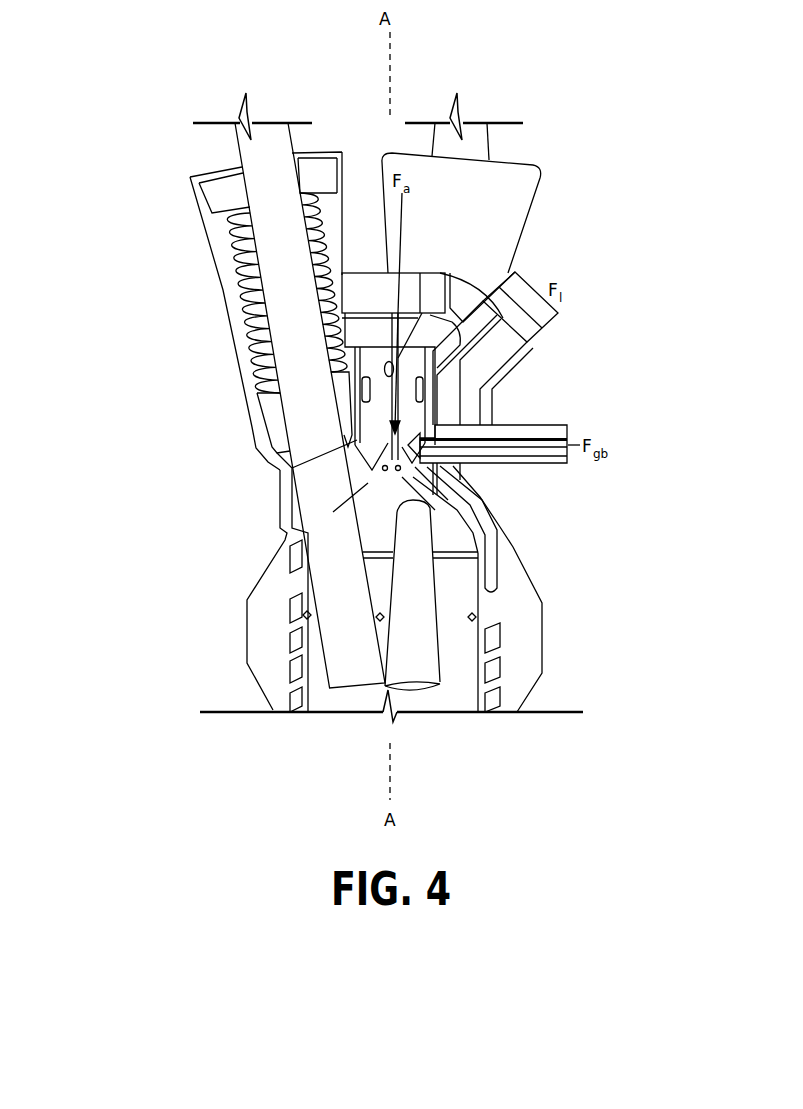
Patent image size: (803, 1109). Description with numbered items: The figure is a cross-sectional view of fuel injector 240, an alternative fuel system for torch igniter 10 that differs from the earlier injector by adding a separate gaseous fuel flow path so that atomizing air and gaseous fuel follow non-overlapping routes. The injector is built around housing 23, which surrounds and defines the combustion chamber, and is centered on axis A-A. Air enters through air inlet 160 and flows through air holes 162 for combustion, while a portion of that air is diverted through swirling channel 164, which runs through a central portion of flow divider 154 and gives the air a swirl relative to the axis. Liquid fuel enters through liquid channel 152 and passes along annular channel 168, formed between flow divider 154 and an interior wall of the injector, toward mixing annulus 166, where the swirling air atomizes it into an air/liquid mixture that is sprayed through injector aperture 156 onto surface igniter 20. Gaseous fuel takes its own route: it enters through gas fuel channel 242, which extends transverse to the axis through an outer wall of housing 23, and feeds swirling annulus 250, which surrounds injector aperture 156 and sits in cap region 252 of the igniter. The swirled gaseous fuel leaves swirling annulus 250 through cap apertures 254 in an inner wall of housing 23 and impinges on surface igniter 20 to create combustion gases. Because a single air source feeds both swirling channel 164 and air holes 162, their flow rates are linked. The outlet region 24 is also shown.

The torch igniter 10 is at (130, 595).
The surface igniter 20 is at (336, 530).
The housing 23 is at (245, 622).
The outlet nozzle 24 is at (452, 673).
The liquid channel 152 is at (500, 352).
The flow divider 154 is at (379, 355).
The injector aperture 156 is at (378, 432).
The air inlet 160 is at (385, 303).
The air holes 162 is at (486, 615).
The swirling channel 164 is at (416, 342).
The mixing annulus 166 is at (347, 427).
The annular channel 168 is at (432, 419).
The fuel injector 240 is at (181, 477).
The gas fuel channel 242 is at (540, 428).
The swirling annulus 250 is at (431, 455).
The cap region 252 is at (514, 530).
The cap apertures 254 is at (373, 461).